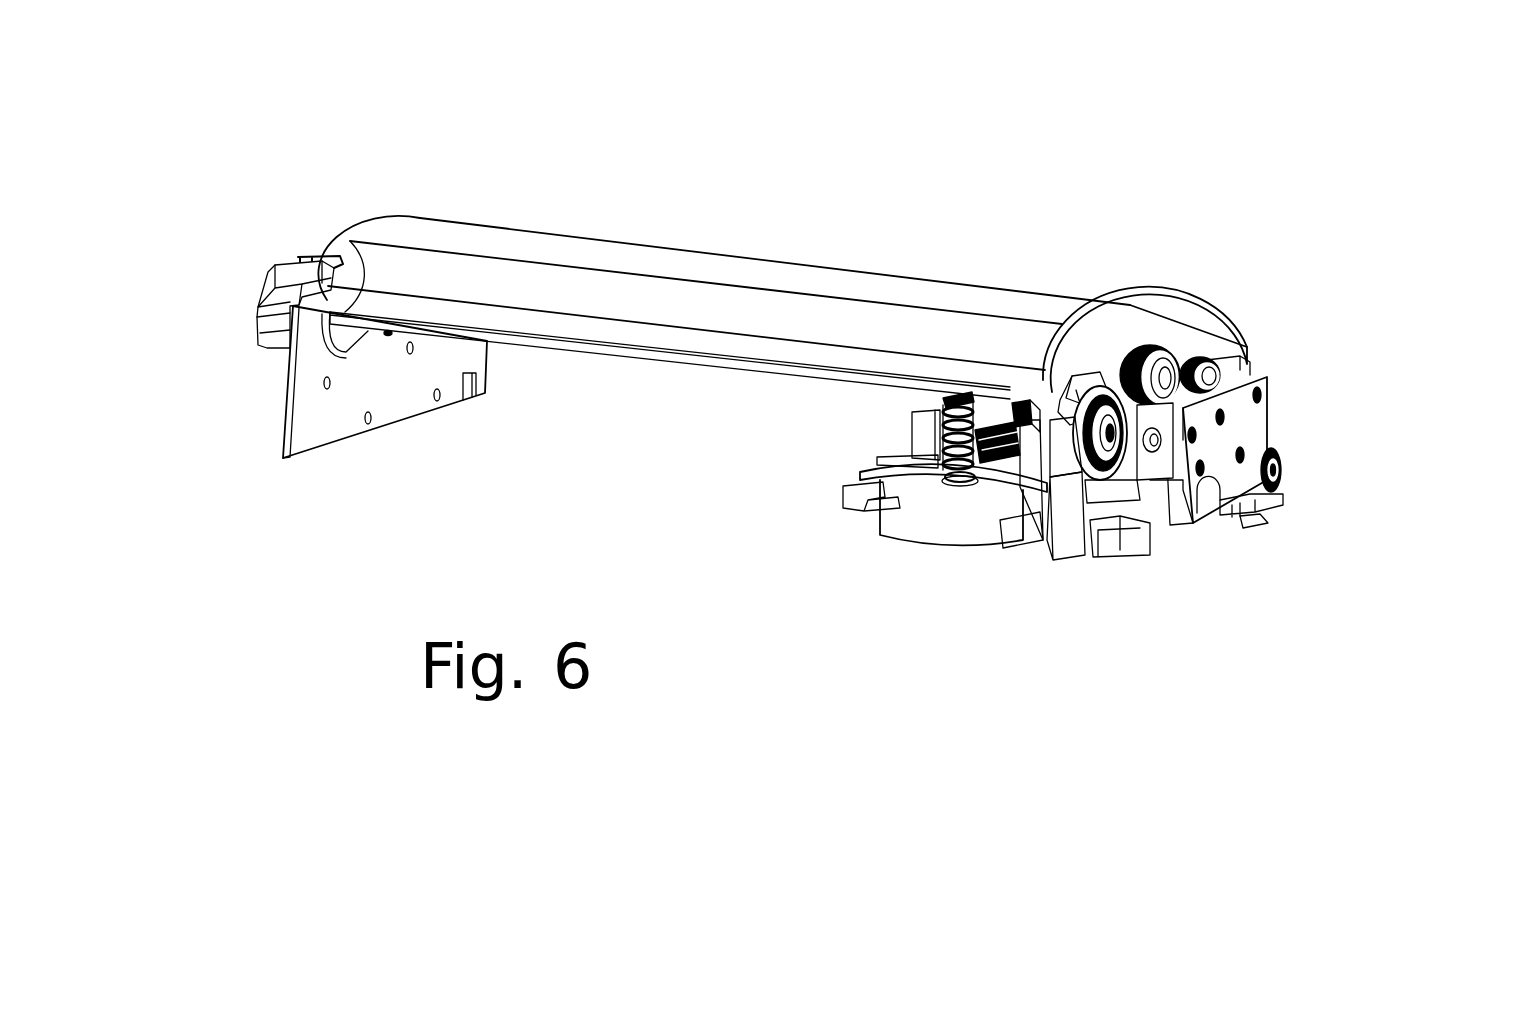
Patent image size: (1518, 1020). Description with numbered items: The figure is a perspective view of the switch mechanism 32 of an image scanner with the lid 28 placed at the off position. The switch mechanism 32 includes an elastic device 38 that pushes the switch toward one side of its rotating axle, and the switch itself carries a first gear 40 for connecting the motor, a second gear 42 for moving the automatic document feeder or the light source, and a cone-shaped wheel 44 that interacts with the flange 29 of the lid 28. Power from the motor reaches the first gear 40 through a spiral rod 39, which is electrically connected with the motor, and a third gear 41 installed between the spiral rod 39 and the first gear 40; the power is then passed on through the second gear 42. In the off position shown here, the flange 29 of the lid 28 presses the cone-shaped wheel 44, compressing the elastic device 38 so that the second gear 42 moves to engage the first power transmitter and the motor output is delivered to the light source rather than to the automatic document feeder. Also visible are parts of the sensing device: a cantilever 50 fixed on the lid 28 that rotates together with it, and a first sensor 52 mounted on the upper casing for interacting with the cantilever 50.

The lid 28 is at (690, 290).
The flange 29 is at (1010, 457).
The switch mechanism 32 is at (1295, 395).
The elastic device 38 is at (1097, 445).
The spiral rod 39 is at (913, 443).
The first gear 40 is at (1017, 400).
The third gear 41 is at (970, 475).
The second gear 42 is at (1123, 517).
The cone-shaped wheel 44 is at (1070, 453).
The cantilever 50 is at (277, 283).
The first sensor 52 is at (277, 350).